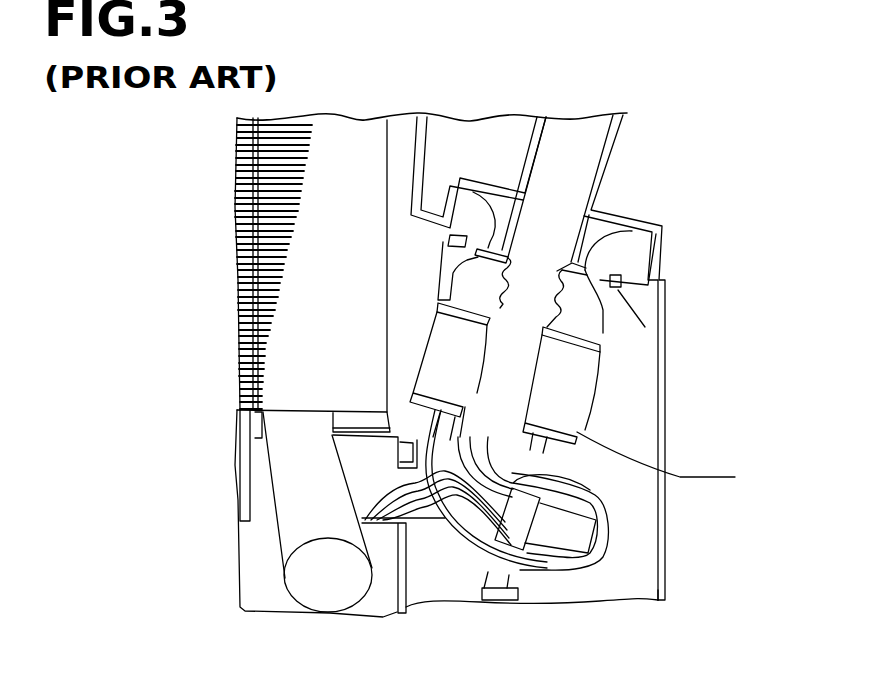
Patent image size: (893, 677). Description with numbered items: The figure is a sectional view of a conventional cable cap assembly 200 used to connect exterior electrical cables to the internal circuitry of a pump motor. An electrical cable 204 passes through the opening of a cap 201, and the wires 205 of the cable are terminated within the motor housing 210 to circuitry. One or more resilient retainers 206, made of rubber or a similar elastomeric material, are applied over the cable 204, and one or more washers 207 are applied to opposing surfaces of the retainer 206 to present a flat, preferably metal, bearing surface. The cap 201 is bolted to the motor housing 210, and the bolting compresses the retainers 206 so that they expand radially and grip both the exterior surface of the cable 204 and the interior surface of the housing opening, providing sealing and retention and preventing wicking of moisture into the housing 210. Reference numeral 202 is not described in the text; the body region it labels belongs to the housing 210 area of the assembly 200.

The cable cap assembly 200 is at (668, 218).
The cap 201 is at (638, 249).
The base body 202 is at (633, 435).
The electrical cable 204 is at (553, 145).
The wires 205 is at (600, 520).
The resilient retainers 206 is at (587, 308).
The washers 207 is at (579, 490).
The motor housing 210 is at (632, 577).